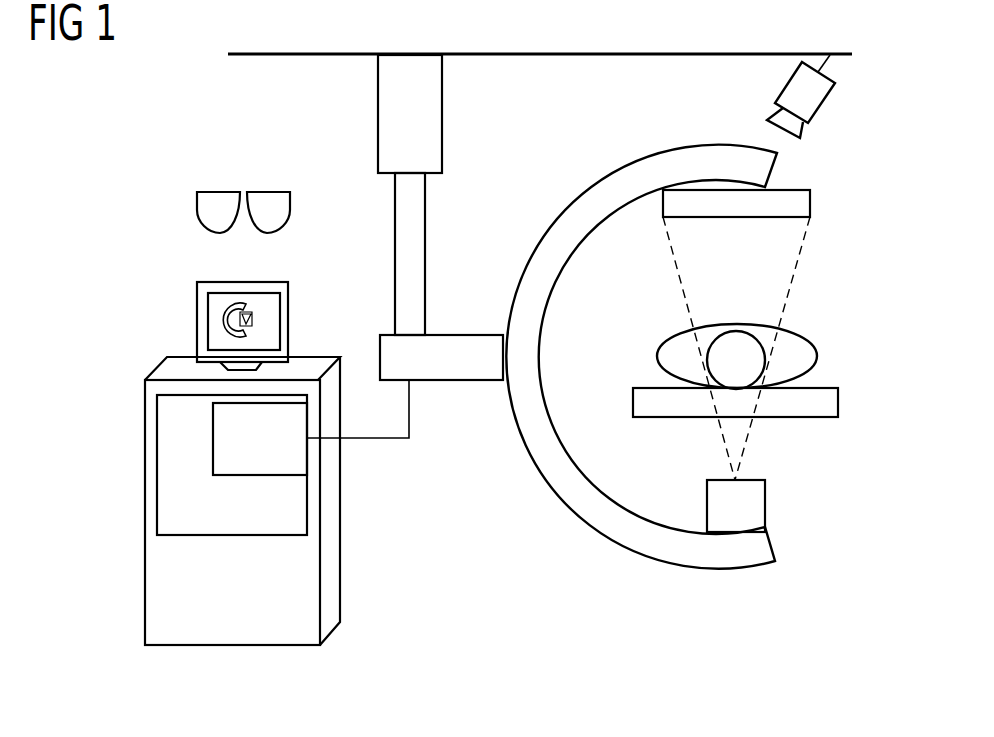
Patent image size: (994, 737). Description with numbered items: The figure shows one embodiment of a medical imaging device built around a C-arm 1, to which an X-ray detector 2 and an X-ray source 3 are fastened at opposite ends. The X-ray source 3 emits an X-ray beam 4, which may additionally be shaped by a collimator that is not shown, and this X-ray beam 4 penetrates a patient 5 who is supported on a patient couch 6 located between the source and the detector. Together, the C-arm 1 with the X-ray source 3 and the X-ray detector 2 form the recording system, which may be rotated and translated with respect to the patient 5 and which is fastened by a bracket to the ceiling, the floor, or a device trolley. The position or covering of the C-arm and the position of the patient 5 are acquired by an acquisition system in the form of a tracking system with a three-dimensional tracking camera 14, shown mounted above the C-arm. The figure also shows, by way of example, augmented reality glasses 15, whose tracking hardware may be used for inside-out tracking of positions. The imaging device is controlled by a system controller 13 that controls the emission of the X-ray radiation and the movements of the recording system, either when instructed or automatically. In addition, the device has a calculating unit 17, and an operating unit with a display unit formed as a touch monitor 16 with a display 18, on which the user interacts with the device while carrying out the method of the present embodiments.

The C-arm 1 is at (605, 178).
The X-ray detector 2 is at (812, 203).
The X-ray source 3 is at (767, 500).
The X-ray beam 4 is at (800, 253).
The patient 5 is at (657, 358).
The patient couch 6 is at (838, 400).
The system controller 13 is at (246, 523).
The 3D tracking camera 14 is at (822, 100).
The augmented reality glasses 15 is at (197, 205).
The touch monitor 16 is at (197, 322).
The calculating unit 17 is at (275, 455).
The display 18 is at (288, 320).